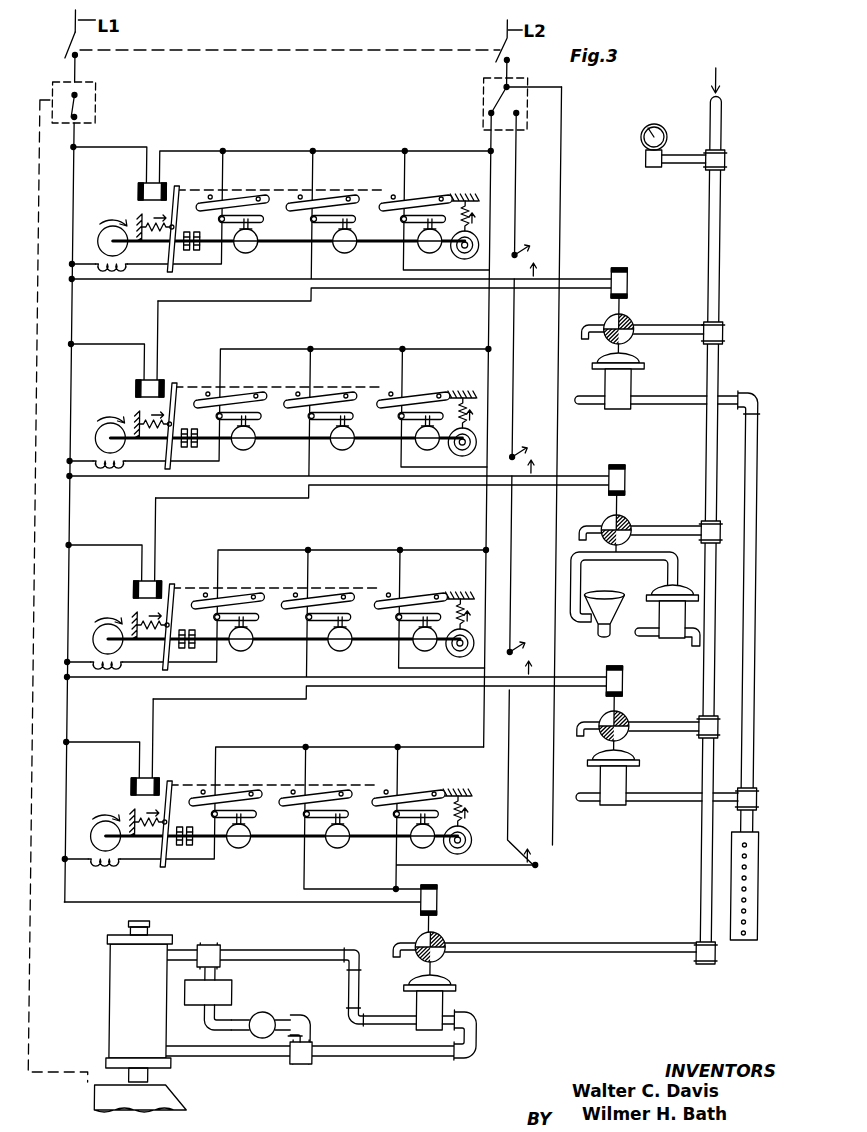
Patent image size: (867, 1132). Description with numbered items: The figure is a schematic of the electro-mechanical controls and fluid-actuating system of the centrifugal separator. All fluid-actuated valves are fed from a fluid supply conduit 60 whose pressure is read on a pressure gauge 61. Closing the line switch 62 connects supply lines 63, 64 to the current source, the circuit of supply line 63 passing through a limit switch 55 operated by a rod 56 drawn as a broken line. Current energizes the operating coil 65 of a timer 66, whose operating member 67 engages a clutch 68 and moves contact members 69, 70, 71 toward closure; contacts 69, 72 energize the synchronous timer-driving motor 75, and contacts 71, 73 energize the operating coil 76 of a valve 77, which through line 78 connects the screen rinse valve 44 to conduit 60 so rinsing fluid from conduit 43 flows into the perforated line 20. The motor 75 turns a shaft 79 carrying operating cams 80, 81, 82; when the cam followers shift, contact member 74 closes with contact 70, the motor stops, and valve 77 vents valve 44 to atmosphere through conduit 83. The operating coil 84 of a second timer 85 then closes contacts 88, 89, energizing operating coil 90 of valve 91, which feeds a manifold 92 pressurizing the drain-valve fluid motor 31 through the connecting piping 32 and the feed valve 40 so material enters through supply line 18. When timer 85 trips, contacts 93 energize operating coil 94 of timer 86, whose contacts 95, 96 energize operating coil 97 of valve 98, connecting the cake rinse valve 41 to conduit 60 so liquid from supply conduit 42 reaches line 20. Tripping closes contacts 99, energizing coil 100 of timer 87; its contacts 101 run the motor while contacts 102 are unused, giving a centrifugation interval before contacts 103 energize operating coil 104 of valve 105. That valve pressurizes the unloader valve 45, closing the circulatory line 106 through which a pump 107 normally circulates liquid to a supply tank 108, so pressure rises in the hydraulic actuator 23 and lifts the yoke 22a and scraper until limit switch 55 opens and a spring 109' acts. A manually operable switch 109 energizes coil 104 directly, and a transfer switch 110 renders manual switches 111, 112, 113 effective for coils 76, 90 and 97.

The supply line 18 is at (651, 640).
The line 20 is at (764, 498).
The yoke 22a is at (110, 1113).
The hydraulic actuator 23 is at (121, 1010).
The fluid motor 31 is at (604, 633).
The pipe loop 32 is at (580, 576).
The feed valve 40 is at (672, 640).
The cake rinse valve 41 is at (636, 786).
The supply conduit 42 is at (594, 796).
The conduit 43 is at (605, 389).
The screen rinse fluid-actuated valve 44 is at (650, 364).
The unloader valve 45 is at (456, 1010).
The limit switch 55 is at (97, 103).
The rod 56 is at (66, 316).
The fluid supply conduit 60 is at (724, 108).
The pressure gauge 61 is at (643, 141).
The line switch 62 is at (66, 45).
The supply line 63 is at (74, 214).
The supply line 64 is at (490, 527).
The operating coil 65 is at (140, 175).
The timer 66 is at (341, 227).
The operating member 67 is at (192, 214).
The clutch 68 is at (170, 249).
The contact member 69 is at (234, 185).
The contact member 70 is at (326, 186).
The contact member 71 is at (418, 186).
The cooperating contact 72 is at (259, 226).
The cooperating contact 73 is at (466, 212).
The contact member 74 is at (353, 228).
The timer-driving motor 75 is at (103, 231).
The operating coil 76 is at (631, 280).
The valve 77 is at (633, 318).
The line 78 is at (672, 328).
The shaft 79 is at (288, 256).
The operating cam 80 is at (245, 247).
The operating cam 81 is at (357, 247).
The operating cam 82 is at (424, 264).
The conduit 83 is at (588, 331).
The operating coil 84 is at (133, 371).
The timer 85 is at (339, 399).
The timer 86 is at (336, 598).
The timer 87 is at (299, 800).
The contacts 88 is at (243, 390).
The contacts 89 is at (427, 386).
The operating coil 90 is at (618, 452).
The valve 91 is at (637, 520).
The manifold 92 is at (652, 585).
The contacts 93 is at (330, 389).
The operating coil 94 is at (160, 565).
The contacts 95 is at (238, 580).
The contacts 96 is at (421, 582).
The operating coil 97 is at (631, 686).
The valve 98 is at (612, 717).
The contacts 99 is at (328, 582).
The coil 100 is at (162, 765).
The contacts 101 is at (236, 777).
The contacts 102 is at (436, 779).
The contacts 103 is at (329, 777).
The operating coil 104 is at (449, 897).
The valve 105 is at (453, 938).
The circulatory line 106 is at (310, 946).
The pump 107 is at (280, 1012).
The supply tank 108 is at (208, 1006).
The manually operable switch 109 is at (526, 779).
The spring 109' is at (517, 466).
The transfer switch 110 is at (487, 88).
The manually operable switch 111 is at (531, 246).
The manually operable switch 112 is at (531, 448).
The manually operable switch 113 is at (531, 643).